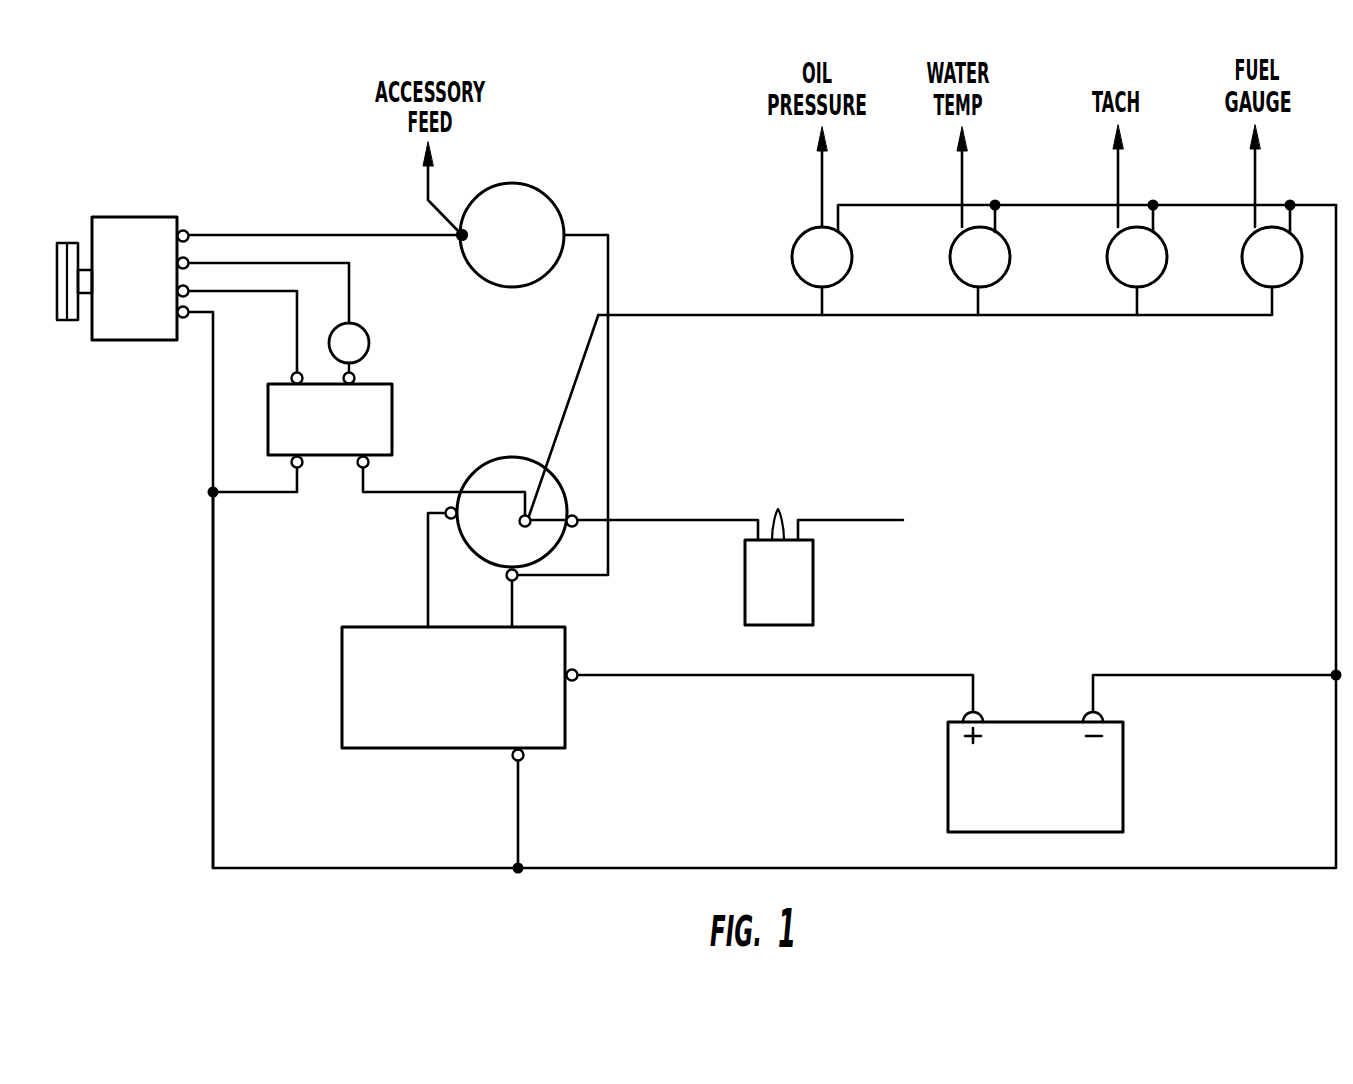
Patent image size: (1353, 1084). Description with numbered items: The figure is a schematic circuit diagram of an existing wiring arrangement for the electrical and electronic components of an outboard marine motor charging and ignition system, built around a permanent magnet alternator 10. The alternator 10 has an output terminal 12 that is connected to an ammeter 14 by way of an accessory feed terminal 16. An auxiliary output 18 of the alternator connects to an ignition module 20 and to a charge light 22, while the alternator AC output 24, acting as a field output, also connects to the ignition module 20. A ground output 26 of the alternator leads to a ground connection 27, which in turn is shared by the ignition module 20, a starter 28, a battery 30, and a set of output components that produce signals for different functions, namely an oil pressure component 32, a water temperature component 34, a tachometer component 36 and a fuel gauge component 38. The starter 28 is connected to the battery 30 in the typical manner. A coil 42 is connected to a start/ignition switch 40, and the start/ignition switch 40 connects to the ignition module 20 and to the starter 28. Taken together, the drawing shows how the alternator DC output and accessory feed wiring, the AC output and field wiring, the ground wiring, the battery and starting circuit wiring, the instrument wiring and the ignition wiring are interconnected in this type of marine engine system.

The permanent magnet alternator 10 is at (107, 217).
The output terminal 12 is at (186, 230).
The ammeter 14 is at (541, 190).
The accessory feed terminal 16 is at (457, 244).
The auxiliary output 18 is at (188, 257).
The ignition module 20 is at (393, 423).
The charge light 22 is at (369, 348).
The alternator AC output 24 is at (189, 294).
The ground output 26 is at (186, 318).
The ground connection 27 is at (213, 588).
The starter 28 is at (363, 748).
The battery 30 is at (1123, 793).
The oil pressure component 32 is at (838, 283).
The water temperature component 34 is at (997, 283).
The tachometer component 36 is at (1152, 283).
The fuel gauge component 38 is at (1287, 283).
The start/ignition switch 40 is at (455, 498).
The coil 42 is at (813, 600).